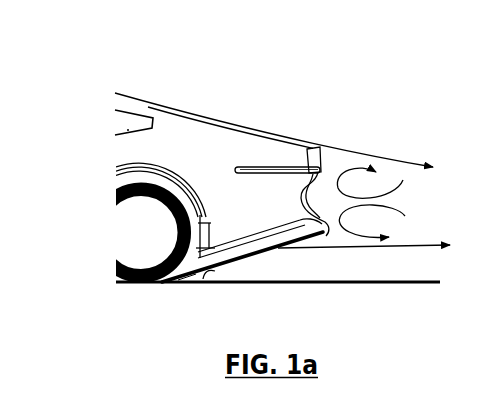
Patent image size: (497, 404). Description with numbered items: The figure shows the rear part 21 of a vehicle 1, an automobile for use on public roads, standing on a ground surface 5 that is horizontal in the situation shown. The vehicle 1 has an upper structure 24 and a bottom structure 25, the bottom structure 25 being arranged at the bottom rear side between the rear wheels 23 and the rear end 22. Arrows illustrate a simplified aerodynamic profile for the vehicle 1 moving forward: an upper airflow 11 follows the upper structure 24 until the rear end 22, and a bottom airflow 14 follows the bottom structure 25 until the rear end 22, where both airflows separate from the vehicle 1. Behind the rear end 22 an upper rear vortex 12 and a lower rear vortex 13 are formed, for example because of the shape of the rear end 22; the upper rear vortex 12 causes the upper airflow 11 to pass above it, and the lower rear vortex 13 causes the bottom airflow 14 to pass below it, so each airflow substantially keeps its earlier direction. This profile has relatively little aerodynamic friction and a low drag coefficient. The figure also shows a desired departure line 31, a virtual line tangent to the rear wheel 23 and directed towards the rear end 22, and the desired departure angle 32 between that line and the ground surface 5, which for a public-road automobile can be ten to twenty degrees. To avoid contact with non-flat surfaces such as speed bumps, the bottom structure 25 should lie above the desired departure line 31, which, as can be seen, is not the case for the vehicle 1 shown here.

The vehicle 1 is at (119, 41).
The ground surface 5 is at (393, 283).
The upper airflow 11 is at (398, 160).
The upper rear vortex 12 is at (393, 178).
The lower rear vortex 13 is at (405, 218).
The bottom airflow 14 is at (415, 249).
The rear part 21 is at (195, 143).
The rear end 22 is at (326, 221).
The rear wheels 23 is at (130, 228).
The upper structure 24 is at (306, 151).
The bottom structure 25 is at (294, 248).
The desired departure line 31 is at (195, 273).
The desired departure angle 32 is at (215, 271).